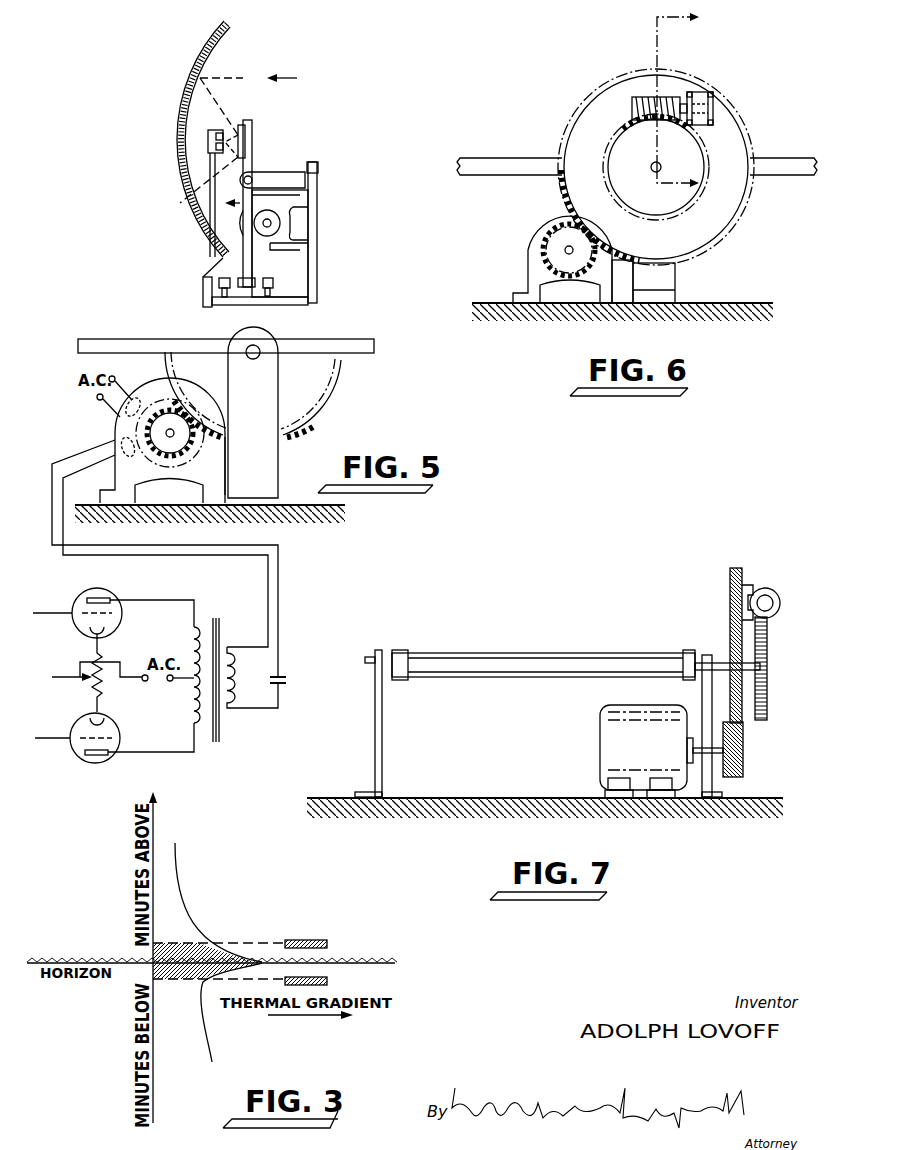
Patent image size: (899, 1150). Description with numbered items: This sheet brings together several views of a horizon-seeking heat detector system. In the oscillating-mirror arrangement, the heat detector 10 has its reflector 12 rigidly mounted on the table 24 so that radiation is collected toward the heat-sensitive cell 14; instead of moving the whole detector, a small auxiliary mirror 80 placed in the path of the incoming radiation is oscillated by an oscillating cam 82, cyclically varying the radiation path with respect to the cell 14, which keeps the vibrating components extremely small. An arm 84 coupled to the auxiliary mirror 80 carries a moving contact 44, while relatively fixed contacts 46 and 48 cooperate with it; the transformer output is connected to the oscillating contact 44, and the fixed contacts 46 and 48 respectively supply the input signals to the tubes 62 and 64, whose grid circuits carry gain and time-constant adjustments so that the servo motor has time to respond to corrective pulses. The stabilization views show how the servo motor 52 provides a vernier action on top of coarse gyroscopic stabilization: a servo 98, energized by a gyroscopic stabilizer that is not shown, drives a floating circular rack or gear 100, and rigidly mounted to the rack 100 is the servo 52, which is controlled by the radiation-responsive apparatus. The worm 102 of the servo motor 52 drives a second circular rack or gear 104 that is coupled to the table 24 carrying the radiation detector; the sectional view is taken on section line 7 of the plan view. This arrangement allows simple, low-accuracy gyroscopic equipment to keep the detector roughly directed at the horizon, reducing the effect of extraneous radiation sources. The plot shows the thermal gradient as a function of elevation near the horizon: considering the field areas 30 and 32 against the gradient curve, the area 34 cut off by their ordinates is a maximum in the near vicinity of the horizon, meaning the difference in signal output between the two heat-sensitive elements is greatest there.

In FIG. 5, the heat detector 10 is at (165, 182).
In FIG. 5, the reflector 12 is at (190, 85).
In FIG. 5, the heat-sensitive cell 14 is at (210, 130).
In FIG. 5, the auxiliary mirror 80 is at (240, 126).
In FIG. 5, the oscillating cam 82 is at (265, 236).
In FIG. 5, the arm 84 is at (240, 258).
In FIG. 5, the oscillating contact 44 is at (250, 288).
In FIG. 5, the fixed contact 46 is at (227, 297).
In FIG. 5, the fixed contact 48 is at (271, 297).
In FIG. 5, the table 24 is at (98, 339).
In FIG. 6, the table 24 is at (493, 158).
In FIG. 7, the table 24 is at (562, 653).
In FIG. 5, the tube 64 is at (112, 594).
In FIG. 5, the tube 62 is at (117, 740).
In FIG. 6, the floating circular rack 100 is at (570, 124).
In FIG. 7, the floating circular rack 100 is at (730, 605).
In FIG. 6, the second circular rack 104 is at (656, 167).
In FIG. 7, the second circular rack 104 is at (768, 700).
In FIG. 6, the worm 102 is at (658, 97).
In FIG. 7, the worm 102 is at (770, 595).
In FIG. 6, the servo motor 52 is at (713, 105).
In FIG. 7, the servo motor 52 is at (752, 586).
In FIG. 6, the servo 98 is at (546, 222).
In FIG. 7, the servo 98 is at (602, 745).
In FIG. 6, the section line 7 is at (678, 100).
In FIG. 3, the area 34 is at (200, 947).
In FIG. 3, the field area 30 is at (300, 940).
In FIG. 3, the field area 32 is at (327, 981).